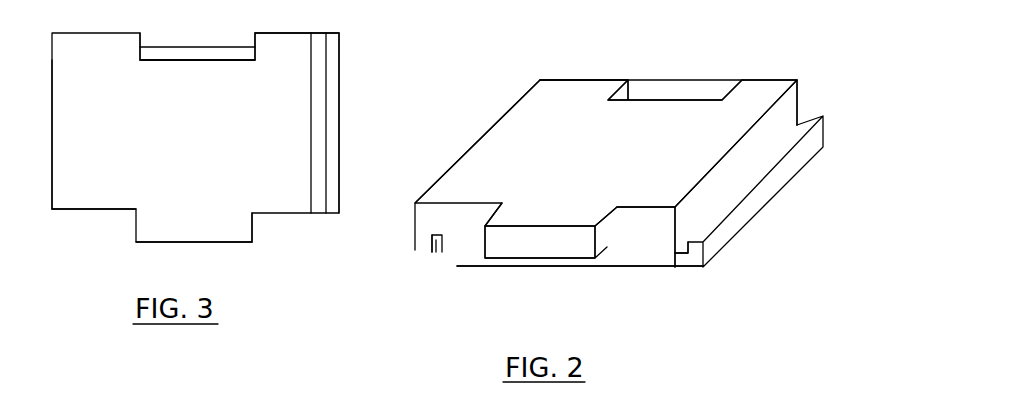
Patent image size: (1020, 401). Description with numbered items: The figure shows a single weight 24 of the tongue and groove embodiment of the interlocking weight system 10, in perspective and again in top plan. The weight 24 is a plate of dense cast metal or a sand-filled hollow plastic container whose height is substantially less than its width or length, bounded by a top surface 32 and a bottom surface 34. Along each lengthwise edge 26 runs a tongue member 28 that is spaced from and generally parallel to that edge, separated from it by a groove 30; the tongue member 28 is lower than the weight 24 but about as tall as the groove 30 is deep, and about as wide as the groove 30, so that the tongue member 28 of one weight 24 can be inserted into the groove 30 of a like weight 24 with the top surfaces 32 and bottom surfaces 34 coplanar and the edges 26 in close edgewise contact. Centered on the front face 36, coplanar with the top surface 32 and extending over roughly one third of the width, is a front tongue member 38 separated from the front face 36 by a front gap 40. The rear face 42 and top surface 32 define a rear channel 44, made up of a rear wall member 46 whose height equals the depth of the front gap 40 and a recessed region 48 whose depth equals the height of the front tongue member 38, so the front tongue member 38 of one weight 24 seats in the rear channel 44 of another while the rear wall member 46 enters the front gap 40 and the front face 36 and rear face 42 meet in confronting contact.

In FIG. 3, the interlocking weight system 10 is at (119, 243).
In FIG. 2, the interlocking weight system 10 is at (511, 70).
In FIG. 3, the weight 24 is at (102, 220).
In FIG. 2, the weight 24 is at (487, 119).
In FIG. 3, the lengthwise edges 26 is at (312, 72).
In FIG. 2, the lengthwise edges 26 is at (788, 117).
In FIG. 3, the tongue member 28 is at (330, 137).
In FIG. 2, the tongue member 28 is at (757, 195).
In FIG. 3, the groove 30 is at (318, 188).
In FIG. 2, the groove 30 is at (432, 252).
In FIG. 3, the top surface 32 is at (200, 141).
In FIG. 2, the top surface 32 is at (592, 171).
In FIG. 2, the bottom surface 34 is at (598, 267).
In FIG. 3, the front face 36 is at (284, 215).
In FIG. 2, the front face 36 is at (668, 253).
In FIG. 3, the front tongue member 38 is at (218, 225).
In FIG. 2, the front tongue member 38 is at (530, 248).
In FIG. 2, the front gap 40 is at (627, 218).
In FIG. 3, the rear face 42 is at (287, 33).
In FIG. 2, the rear face 42 is at (580, 79).
In FIG. 3, the rear channel 44 is at (160, 40).
In FIG. 2, the rear channel 44 is at (672, 96).
In FIG. 3, the rear wall member 46 is at (187, 42).
In FIG. 3, the recessed region 48 is at (218, 55).